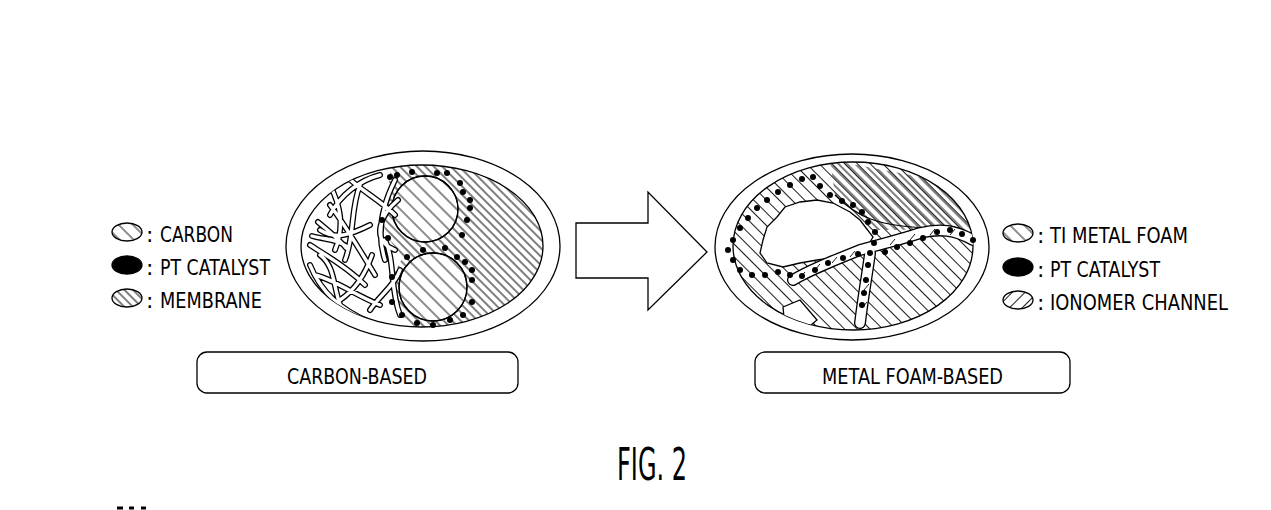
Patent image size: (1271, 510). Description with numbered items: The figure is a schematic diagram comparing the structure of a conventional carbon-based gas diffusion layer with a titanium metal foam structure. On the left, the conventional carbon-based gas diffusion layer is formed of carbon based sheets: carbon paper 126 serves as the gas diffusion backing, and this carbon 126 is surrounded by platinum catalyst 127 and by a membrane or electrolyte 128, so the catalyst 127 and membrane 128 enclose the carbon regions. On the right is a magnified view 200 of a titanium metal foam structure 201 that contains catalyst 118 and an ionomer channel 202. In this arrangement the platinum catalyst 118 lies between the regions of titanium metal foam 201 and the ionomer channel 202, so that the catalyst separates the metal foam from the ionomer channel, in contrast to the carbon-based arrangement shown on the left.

The magnified view 200 is at (1018, 70).
The carbon paper 126 is at (417, 171).
The platinum catalyst 127 is at (477, 261).
The membrane 128 is at (507, 220).
The titanium metal foam structure 201 is at (855, 182).
The catalyst 118 is at (873, 255).
The ionomer channel 202 is at (810, 303).